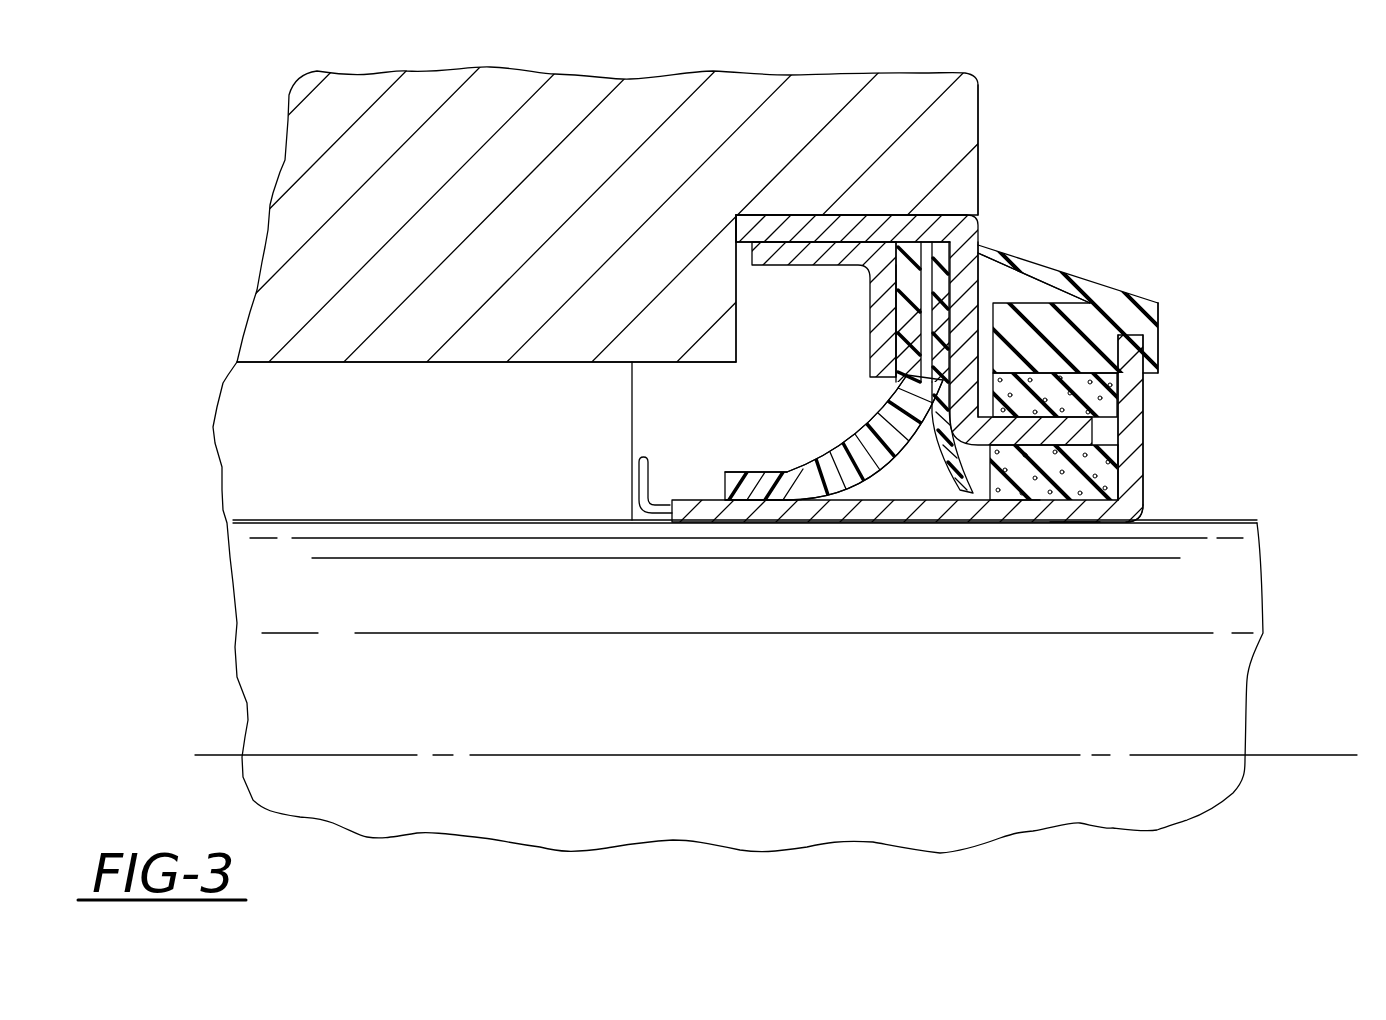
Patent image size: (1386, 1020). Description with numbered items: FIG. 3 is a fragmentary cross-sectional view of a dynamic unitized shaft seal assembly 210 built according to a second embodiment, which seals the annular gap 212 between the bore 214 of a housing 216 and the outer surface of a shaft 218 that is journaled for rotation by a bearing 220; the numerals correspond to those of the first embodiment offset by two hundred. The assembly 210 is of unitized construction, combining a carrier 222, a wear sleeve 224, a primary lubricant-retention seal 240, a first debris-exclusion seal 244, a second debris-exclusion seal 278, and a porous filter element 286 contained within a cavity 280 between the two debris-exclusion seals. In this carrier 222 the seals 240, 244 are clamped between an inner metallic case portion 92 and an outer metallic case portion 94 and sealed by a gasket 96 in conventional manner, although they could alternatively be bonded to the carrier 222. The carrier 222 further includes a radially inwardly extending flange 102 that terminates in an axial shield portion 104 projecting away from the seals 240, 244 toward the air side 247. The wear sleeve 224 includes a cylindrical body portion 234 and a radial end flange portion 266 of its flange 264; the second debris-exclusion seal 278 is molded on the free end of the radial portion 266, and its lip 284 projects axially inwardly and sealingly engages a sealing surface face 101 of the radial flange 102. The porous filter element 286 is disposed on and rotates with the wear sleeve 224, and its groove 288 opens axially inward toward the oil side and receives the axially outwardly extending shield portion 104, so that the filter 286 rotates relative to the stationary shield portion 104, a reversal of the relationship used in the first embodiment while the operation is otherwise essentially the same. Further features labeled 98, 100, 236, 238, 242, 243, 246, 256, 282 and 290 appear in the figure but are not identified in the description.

The inner metallic case portion 92 is at (788, 260).
The outer metallic case portion 94 is at (787, 213).
The gasket 96 is at (943, 265).
The case flange 98 is at (847, 222).
The flange notch 100 is at (740, 238).
The sealing surface face 101 is at (985, 290).
The radially inwardly extending flange 102 is at (978, 325).
The axial shield portion 104 is at (1143, 472).
The seal assembly 210 is at (1217, 190).
The annular gap 212 is at (655, 382).
The bore 214 is at (700, 383).
The housing 216 is at (967, 110).
The shaft 218 is at (1245, 655).
The bearing 220 is at (333, 393).
The carrier 222 is at (903, 216).
The wear sleeve 224 is at (913, 522).
The cylindrical body portion 234 is at (1013, 512).
The sleeve running surface 236 is at (1070, 522).
The primary sealing lip 238 is at (890, 500).
The primary lubricant-retention seal 240 is at (903, 328).
The seal lip body 242 is at (820, 467).
The oil side cavity 243 is at (668, 448).
The first debris-exclusion seal 244 is at (885, 392).
The secondary lip 246 is at (947, 480).
The air side 247 is at (1322, 388).
The lip contact portion 256 is at (817, 480).
The wear sleeve flange 264 is at (1130, 428).
The radial end flange portion 266 is at (1122, 458).
The second debris-exclusion seal 278 is at (1160, 306).
The cavity 280 is at (1102, 388).
The dust lip body 282 is at (1100, 323).
The lip 284 is at (1043, 268).
The porous filter element 286 is at (1118, 484).
The groove 288 is at (1117, 500).
The retention lip 290 is at (636, 470).